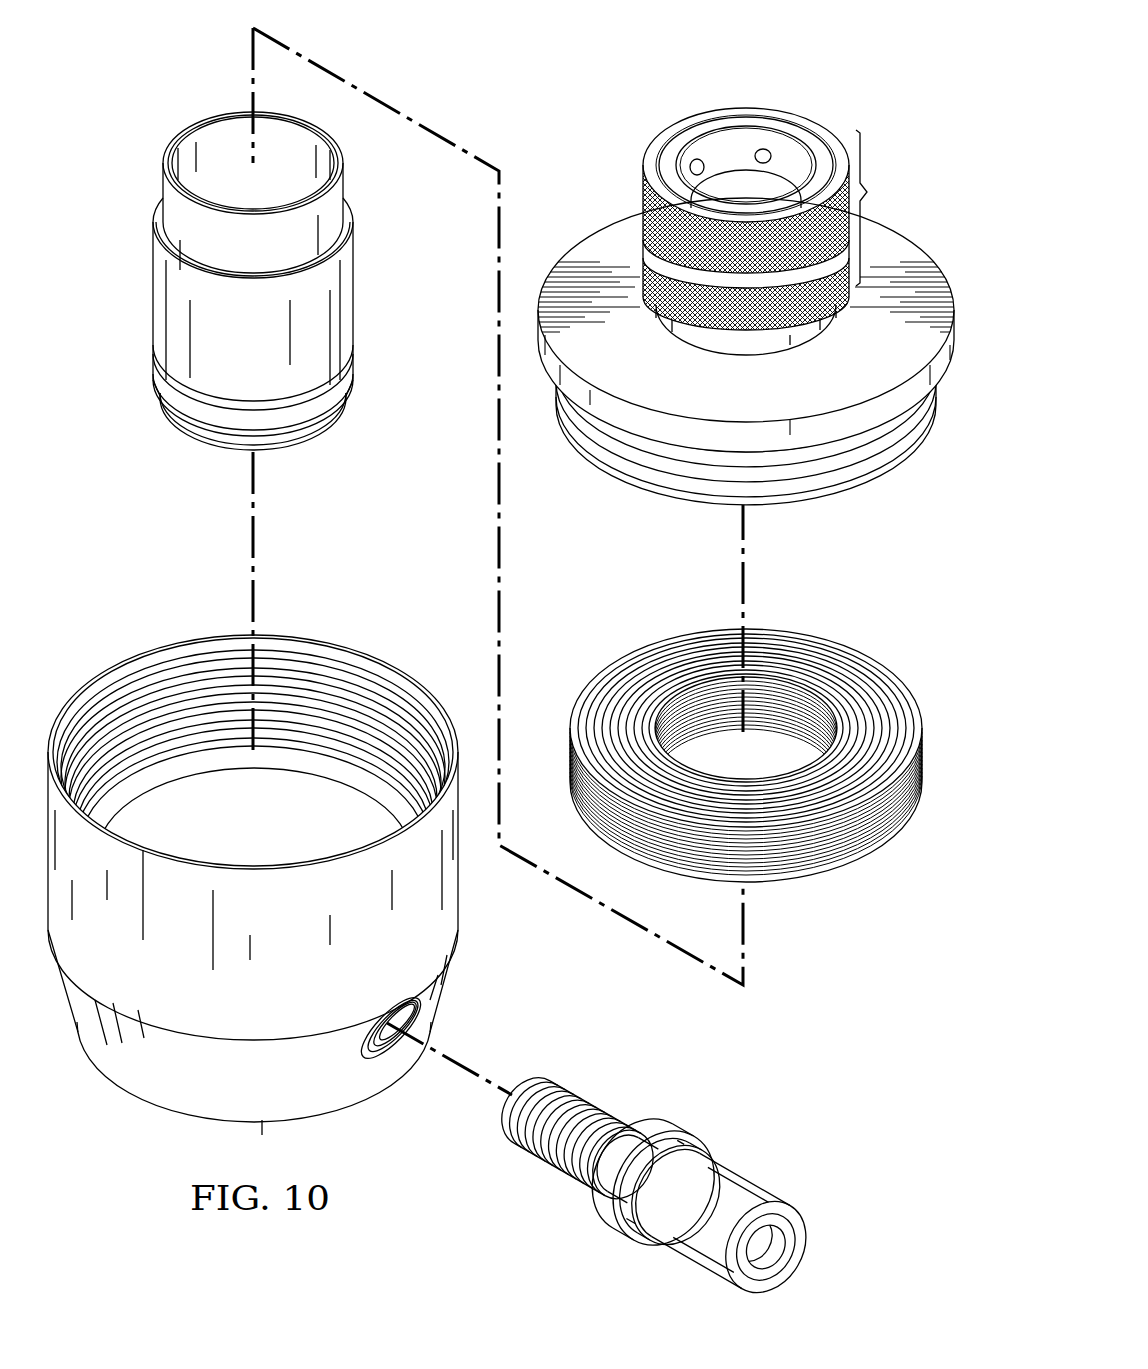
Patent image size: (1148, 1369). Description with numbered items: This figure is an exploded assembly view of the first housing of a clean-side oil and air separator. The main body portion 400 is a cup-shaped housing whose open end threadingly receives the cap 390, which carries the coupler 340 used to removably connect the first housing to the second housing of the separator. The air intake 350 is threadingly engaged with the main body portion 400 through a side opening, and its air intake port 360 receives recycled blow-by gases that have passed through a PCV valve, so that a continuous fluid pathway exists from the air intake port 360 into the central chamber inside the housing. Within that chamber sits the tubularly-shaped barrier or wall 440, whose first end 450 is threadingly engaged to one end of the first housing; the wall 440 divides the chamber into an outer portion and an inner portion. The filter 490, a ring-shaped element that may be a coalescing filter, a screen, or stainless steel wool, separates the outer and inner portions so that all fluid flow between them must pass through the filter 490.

The coupler 340 is at (781, 231).
The air intake 350 is at (680, 1254).
The air intake port 360 is at (770, 1258).
The cap 390 is at (606, 221).
The main body portion 400 is at (458, 907).
The tubularly-shaped barrier or wall 440 is at (153, 290).
The first end of wall 450 is at (230, 450).
The filter 490 is at (846, 868).